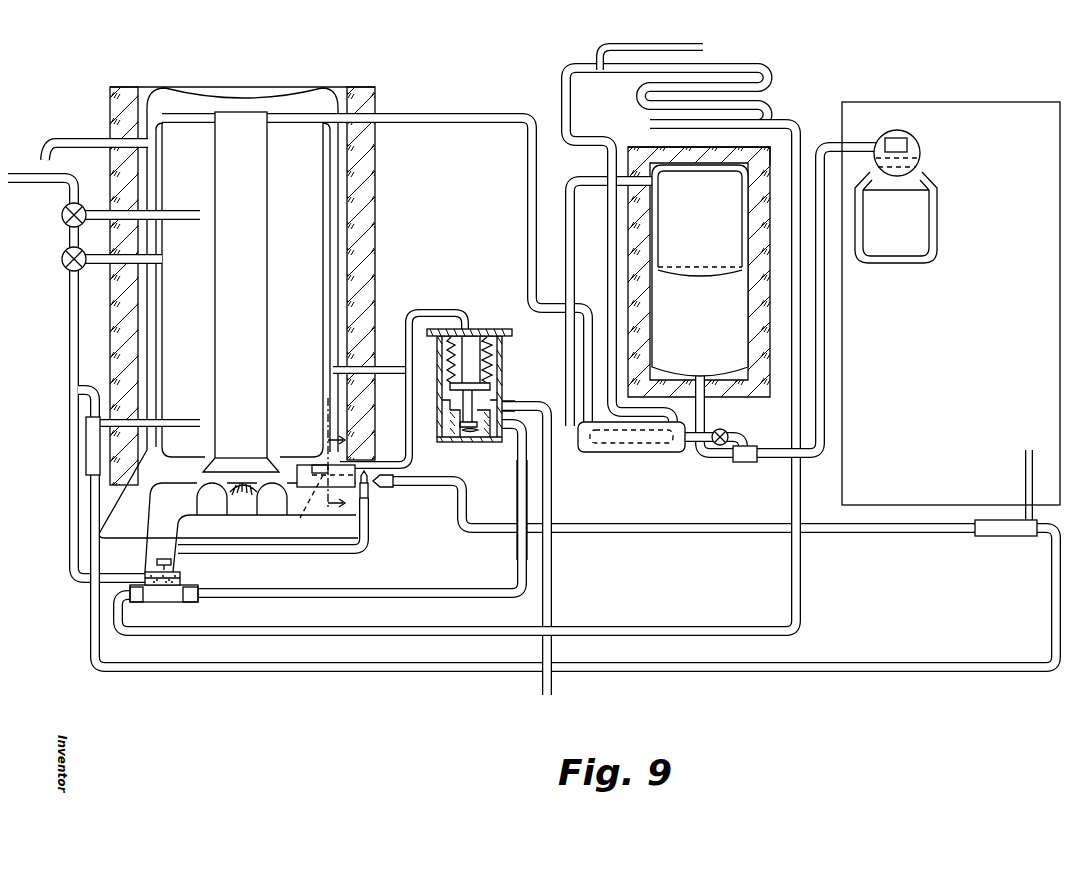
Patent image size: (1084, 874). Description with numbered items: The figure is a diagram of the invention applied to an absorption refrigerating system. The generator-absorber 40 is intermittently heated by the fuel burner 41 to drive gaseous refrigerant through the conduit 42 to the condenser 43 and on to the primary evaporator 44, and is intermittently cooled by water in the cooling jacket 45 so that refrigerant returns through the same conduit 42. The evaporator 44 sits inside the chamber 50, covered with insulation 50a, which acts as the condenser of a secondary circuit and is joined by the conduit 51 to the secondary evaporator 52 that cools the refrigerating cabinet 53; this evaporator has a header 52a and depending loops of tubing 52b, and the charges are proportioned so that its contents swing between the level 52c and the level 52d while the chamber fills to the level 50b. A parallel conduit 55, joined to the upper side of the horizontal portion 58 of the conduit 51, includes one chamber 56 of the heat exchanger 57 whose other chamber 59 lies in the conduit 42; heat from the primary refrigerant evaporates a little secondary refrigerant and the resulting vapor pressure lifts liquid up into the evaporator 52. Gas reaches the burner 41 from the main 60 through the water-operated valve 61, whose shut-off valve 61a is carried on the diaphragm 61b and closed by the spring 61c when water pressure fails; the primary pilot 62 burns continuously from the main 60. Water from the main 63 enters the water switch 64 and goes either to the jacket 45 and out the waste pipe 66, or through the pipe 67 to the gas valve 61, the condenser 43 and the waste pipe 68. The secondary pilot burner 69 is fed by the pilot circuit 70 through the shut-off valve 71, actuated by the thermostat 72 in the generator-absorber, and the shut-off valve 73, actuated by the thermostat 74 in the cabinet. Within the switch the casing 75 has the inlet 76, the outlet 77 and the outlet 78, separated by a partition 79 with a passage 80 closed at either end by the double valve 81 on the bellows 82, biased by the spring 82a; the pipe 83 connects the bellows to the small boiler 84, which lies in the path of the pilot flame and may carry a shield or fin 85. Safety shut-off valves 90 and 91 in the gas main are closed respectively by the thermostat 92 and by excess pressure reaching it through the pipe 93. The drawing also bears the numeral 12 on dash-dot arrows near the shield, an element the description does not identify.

The air/gas flow direction arrows 12 is at (322, 465).
The generator-absorber 40 is at (243, 87).
The fuel burner 41 is at (243, 490).
The conduit 42 is at (462, 113).
The condenser 43 is at (758, 78).
The evaporator 44 is at (746, 218).
The cooling jacket 45 is at (335, 182).
The chamber 50 is at (748, 315).
The insulation 50a is at (765, 150).
The level 50b is at (700, 268).
The conduit 51 is at (828, 428).
The evaporator 52 is at (920, 183).
The header 52a is at (897, 131).
The loops of tubing 52b is at (937, 228).
The level 52c is at (905, 145).
The level 52d is at (920, 160).
The refrigerating cabinet 53 is at (1060, 305).
The parallel conduit 55 is at (568, 190).
The chamber 56 is at (625, 452).
The heat exchanger 57 is at (585, 452).
The horizontal portion 58 is at (755, 462).
The chamber 59 is at (665, 443).
The main 60 is at (40, 183).
The water-operated valve 61 is at (110, 600).
The shut-off valve 61a is at (172, 555).
The pressure responsive diaphragm 61b is at (195, 602).
The spring 61c is at (182, 576).
The primary pilot 62 is at (370, 500).
The water main 63 is at (543, 690).
The water switch 64 is at (481, 372).
The waste pipe 66 is at (52, 140).
The pipe 67 is at (517, 565).
The waste pipe 68 is at (703, 47).
The secondary pilot burner 69 is at (400, 488).
The pilot circuit 70 is at (408, 672).
The shut-off valve 71 is at (85, 455).
The thermostat 72 is at (190, 418).
The shut-off valve 73 is at (1003, 537).
The thermostat 74 is at (1025, 473).
The casing 75 is at (503, 365).
The inlet 76 is at (495, 406).
The outlet 77 is at (392, 365).
The outlet 78 is at (518, 455).
The partition 79 is at (445, 440).
The passage 80 is at (445, 405).
The double valve 81 is at (470, 335).
The bellows 82 is at (492, 350).
The spring 82a is at (490, 440).
The pipe 83 is at (355, 437).
The boiler 84 is at (304, 506).
The shield or fin 85 is at (298, 470).
The shut-off valve 90 is at (62, 220).
The shut-off valve 91 is at (62, 265).
The thermostat 92 is at (190, 210).
The pipe 93 is at (160, 268).